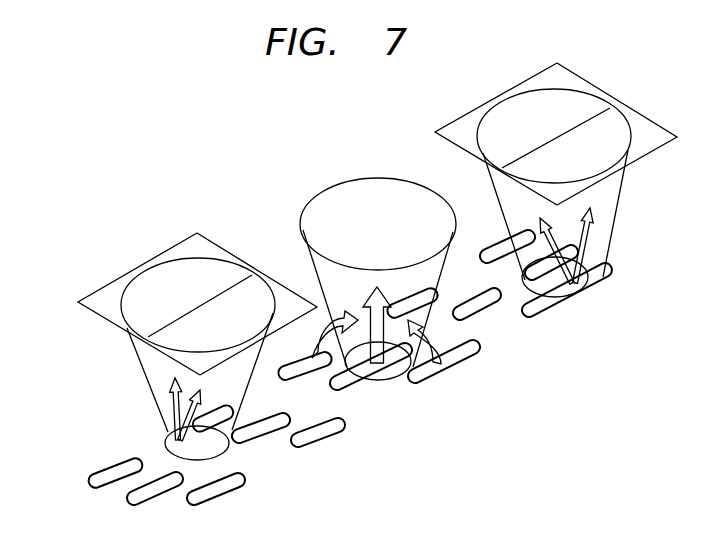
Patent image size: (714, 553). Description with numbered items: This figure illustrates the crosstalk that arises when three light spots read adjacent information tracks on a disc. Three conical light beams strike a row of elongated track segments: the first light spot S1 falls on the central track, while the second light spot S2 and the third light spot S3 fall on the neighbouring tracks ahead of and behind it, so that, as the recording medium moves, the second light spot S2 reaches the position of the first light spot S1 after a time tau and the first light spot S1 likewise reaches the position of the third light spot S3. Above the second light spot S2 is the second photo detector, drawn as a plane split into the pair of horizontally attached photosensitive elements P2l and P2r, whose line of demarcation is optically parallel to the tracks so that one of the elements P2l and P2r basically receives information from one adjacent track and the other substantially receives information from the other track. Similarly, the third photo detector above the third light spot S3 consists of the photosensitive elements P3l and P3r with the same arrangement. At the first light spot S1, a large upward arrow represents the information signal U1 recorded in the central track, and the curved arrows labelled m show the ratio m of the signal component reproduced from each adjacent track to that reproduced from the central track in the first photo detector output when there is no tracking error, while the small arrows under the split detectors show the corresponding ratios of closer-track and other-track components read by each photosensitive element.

The photosensitive element P3l is at (190, 243).
The photosensitive element P3r is at (280, 292).
The photosensitive element P2l is at (575, 85).
The photosensitive element P2r is at (650, 138).
The first light spot S1 is at (393, 365).
The second light spot S2 is at (533, 287).
The third light spot S3 is at (190, 457).
The information signal U1 is at (368, 317).
The crosstalk ratio m is at (382, 329).